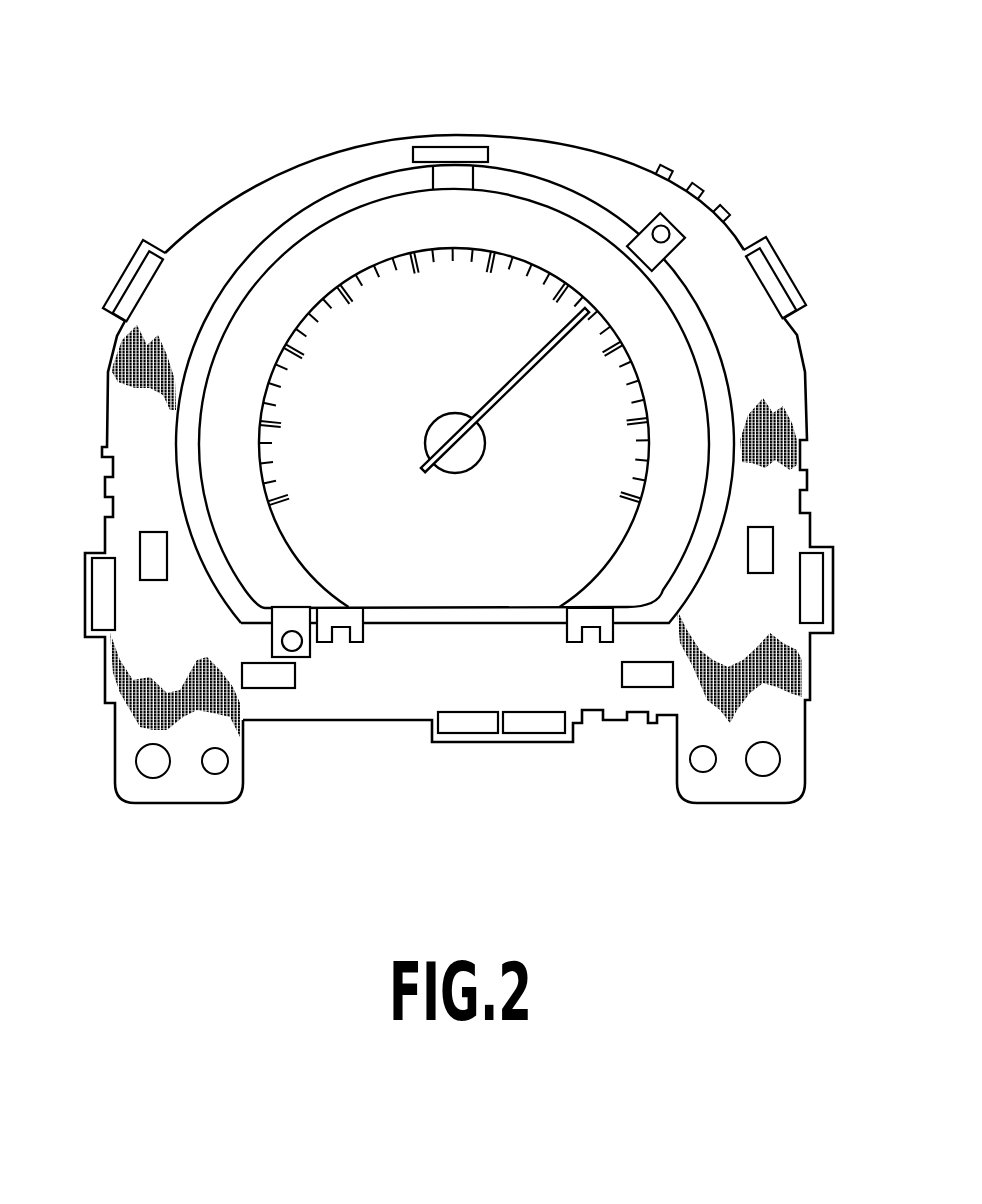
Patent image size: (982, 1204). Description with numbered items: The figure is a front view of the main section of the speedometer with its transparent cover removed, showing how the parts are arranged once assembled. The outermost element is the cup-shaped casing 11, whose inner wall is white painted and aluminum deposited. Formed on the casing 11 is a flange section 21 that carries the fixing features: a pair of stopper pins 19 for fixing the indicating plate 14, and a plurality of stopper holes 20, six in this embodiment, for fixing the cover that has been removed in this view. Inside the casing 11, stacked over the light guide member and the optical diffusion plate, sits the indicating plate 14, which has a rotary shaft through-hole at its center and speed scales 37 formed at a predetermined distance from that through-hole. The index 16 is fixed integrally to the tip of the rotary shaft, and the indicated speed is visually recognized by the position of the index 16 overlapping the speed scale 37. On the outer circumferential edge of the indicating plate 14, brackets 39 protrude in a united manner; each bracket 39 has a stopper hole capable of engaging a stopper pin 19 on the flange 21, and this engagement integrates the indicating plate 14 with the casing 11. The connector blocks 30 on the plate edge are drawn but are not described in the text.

The casing 11 is at (416, 401).
The indicating plate 14 is at (480, 394).
The index 16 is at (505, 390).
The stopper pin 19 is at (507, 420).
The stopper hole 20 is at (455, 442).
The flange section 21 is at (136, 562).
The connector block 30 is at (465, 394).
The speed scale 37 is at (458, 412).
The bracket 39 is at (428, 386).